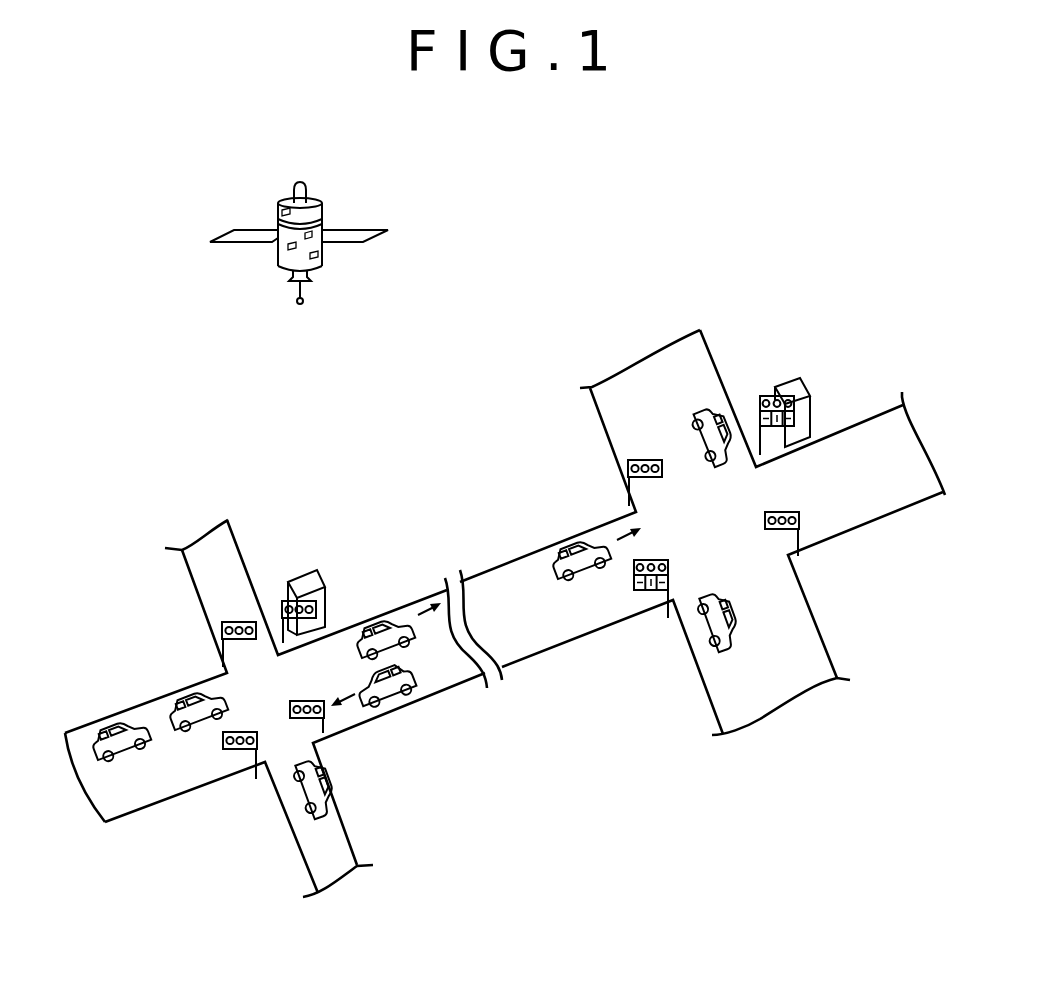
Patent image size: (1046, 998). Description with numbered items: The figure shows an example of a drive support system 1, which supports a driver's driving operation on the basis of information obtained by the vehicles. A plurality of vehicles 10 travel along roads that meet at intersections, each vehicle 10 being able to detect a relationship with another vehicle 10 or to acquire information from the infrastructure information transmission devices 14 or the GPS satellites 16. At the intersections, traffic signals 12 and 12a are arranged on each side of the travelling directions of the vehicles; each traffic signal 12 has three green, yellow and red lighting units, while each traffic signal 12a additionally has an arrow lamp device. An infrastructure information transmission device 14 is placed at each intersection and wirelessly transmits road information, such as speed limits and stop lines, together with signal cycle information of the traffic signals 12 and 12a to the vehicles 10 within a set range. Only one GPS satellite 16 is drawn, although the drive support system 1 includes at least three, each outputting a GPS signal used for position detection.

The drive support system 1 is at (188, 380).
The vehicle 10 is at (707, 396).
The traffic signal 12 is at (628, 467).
The traffic signal 12a is at (762, 394).
The infrastructure information transmission device 14 is at (292, 582).
The GPS satellite 16 is at (322, 258).